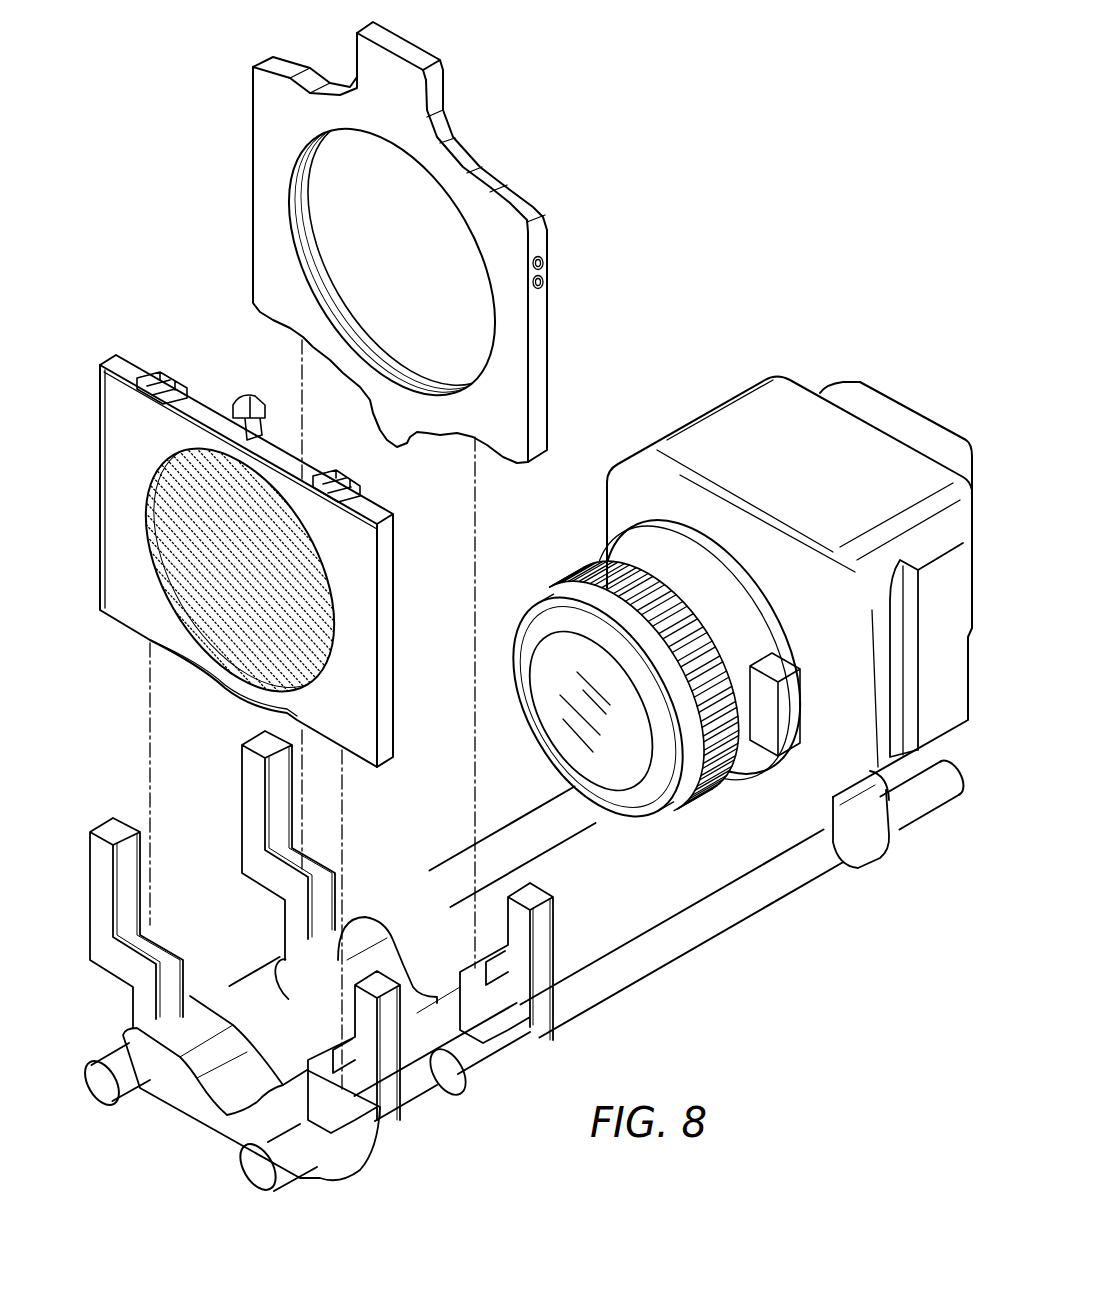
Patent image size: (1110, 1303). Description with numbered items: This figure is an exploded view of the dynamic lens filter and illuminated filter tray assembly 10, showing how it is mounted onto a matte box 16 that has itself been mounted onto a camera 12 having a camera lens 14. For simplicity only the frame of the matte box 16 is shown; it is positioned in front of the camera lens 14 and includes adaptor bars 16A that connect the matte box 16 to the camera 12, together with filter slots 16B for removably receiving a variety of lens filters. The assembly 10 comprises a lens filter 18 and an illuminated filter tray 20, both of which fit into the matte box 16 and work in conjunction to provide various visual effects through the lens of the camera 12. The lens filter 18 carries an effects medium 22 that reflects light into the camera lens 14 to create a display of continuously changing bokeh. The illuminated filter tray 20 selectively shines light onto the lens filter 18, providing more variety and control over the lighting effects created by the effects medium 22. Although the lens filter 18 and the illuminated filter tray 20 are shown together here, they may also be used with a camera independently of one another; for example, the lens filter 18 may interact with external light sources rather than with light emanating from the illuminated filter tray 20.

The dynamic lens filter and illuminated filter tray assembly 10 is at (121, 326).
The camera 12 is at (767, 417).
The camera lens 14 is at (558, 657).
The matte box 16 is at (447, 1145).
The adaptor bars 16A is at (523, 976).
The filter slots 16B is at (489, 957).
The lens filter 18 is at (150, 478).
The illuminated filter tray 20 is at (287, 72).
The effects medium 22 is at (213, 463).